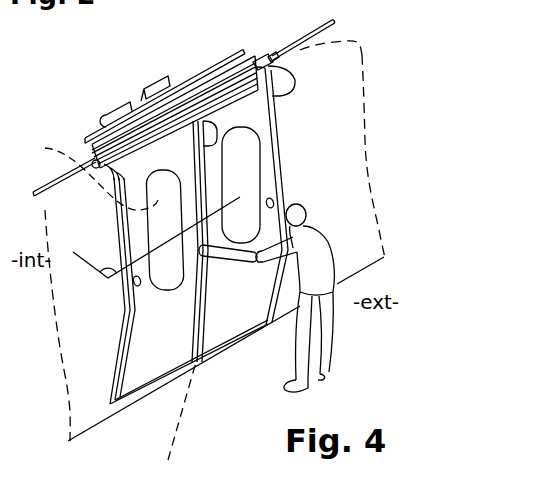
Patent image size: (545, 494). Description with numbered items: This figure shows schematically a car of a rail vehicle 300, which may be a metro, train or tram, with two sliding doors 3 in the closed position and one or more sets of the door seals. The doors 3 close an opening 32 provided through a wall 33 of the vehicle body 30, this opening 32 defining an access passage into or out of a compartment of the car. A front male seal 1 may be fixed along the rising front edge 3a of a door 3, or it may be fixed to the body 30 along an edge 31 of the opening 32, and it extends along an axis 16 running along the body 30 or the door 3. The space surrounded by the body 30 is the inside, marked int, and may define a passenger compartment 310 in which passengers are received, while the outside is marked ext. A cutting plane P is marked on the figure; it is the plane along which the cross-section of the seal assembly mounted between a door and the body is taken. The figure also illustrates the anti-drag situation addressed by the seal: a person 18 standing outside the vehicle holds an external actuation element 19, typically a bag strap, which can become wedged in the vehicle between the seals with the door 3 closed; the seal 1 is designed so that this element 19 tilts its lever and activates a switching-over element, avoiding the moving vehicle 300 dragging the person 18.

The front male seal 1 is at (293, 162).
The door 3 is at (147, 349).
The front edge 3a is at (212, 129).
The axis 16 is at (182, 410).
The person 18 is at (332, 324).
The external actuation element 19 is at (234, 270).
The body 30 is at (342, 109).
The edge 31 is at (261, 62).
The opening 32 is at (48, 149).
The wall 33 is at (342, 63).
The vehicle 300 is at (96, 442).
The passenger compartment 310 is at (304, 24).
The cutting plane P is at (156, 237).